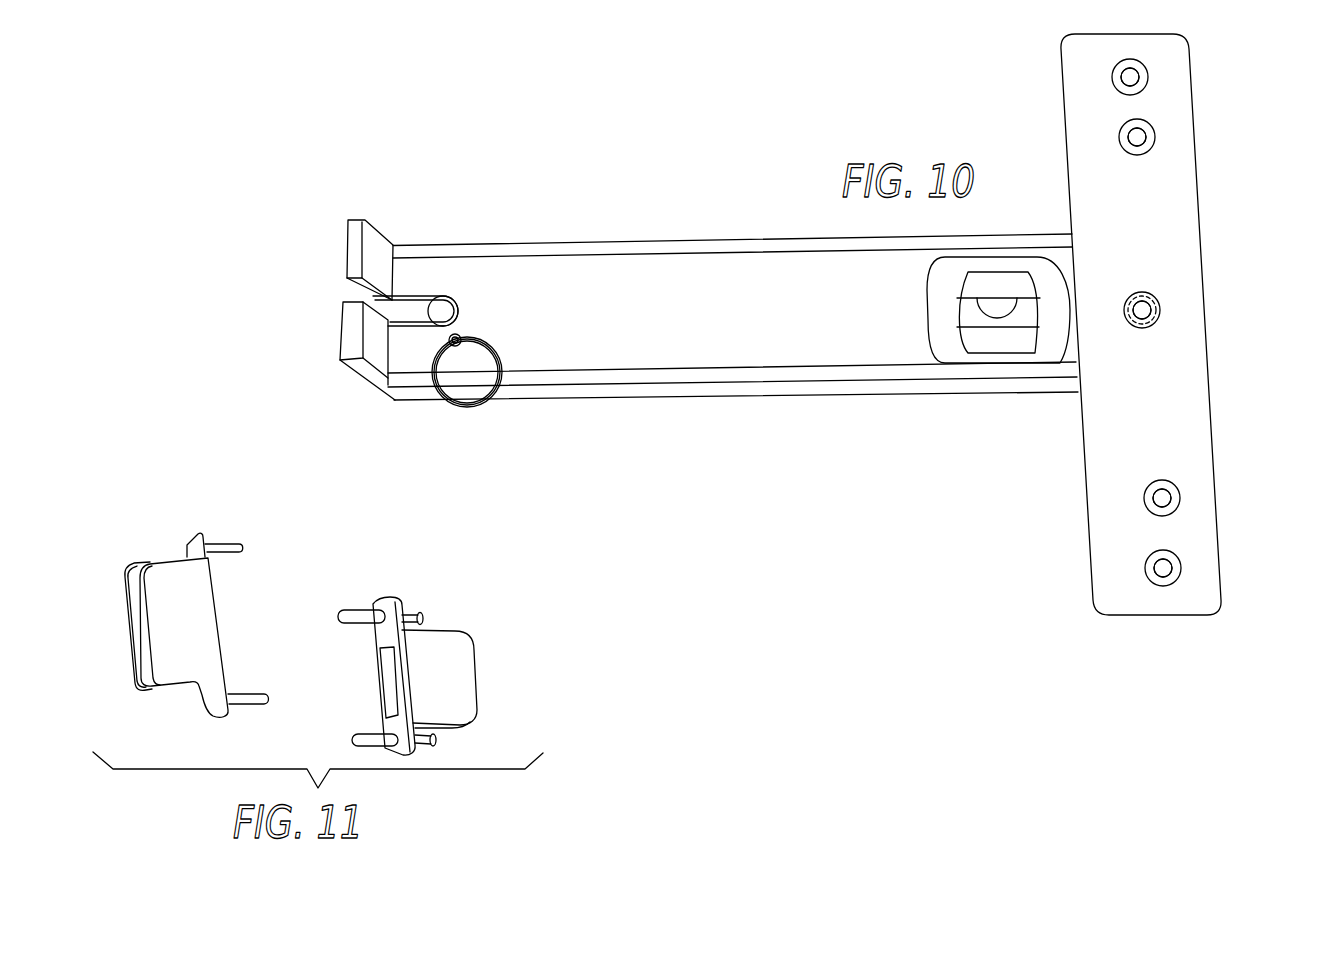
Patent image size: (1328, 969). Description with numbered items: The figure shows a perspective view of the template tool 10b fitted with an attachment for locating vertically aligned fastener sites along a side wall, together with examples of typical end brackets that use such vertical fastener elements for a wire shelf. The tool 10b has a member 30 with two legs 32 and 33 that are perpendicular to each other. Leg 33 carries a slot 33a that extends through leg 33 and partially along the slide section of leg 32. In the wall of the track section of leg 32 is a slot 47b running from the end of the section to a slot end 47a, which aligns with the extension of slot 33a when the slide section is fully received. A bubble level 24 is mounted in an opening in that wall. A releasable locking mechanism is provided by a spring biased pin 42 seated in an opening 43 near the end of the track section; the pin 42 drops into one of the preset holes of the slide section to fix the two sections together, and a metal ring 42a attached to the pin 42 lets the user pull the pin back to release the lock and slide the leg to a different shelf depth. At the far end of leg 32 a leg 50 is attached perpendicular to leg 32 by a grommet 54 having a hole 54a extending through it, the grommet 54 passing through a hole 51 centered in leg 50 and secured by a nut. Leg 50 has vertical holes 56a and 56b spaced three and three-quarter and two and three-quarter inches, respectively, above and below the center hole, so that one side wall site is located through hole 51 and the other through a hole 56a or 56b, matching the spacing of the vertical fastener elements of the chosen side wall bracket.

The template tool 10b is at (608, 240).
The bubble level 24 is at (963, 313).
The member 30 is at (885, 397).
The leg 32 is at (723, 388).
The leg 33 is at (356, 233).
The slot 33a is at (343, 301).
The spring biased pin 42 is at (449, 341).
The metal ring 42a is at (458, 407).
The opening 43 is at (461, 335).
The slot end 47a is at (458, 318).
The slot 47b is at (403, 312).
The leg 50 is at (1210, 395).
The hole 51 is at (1135, 323).
The grommet 54 is at (1116, 68).
The hole 54a is at (1141, 296).
The holes 56a is at (1130, 77).
The holes 56b is at (1137, 137).